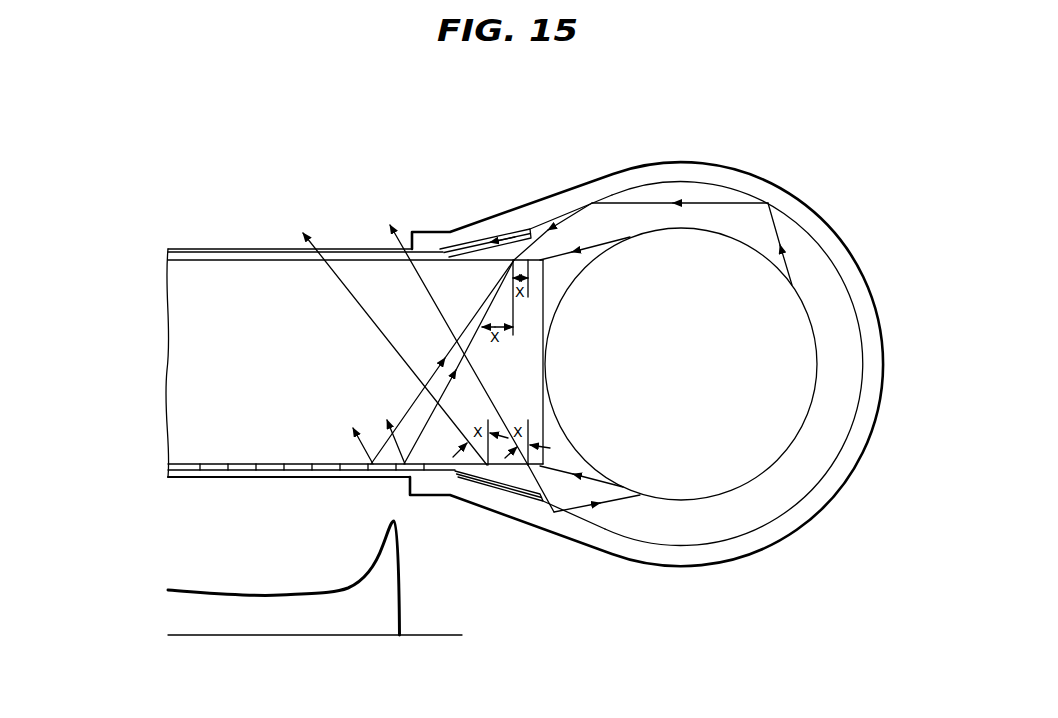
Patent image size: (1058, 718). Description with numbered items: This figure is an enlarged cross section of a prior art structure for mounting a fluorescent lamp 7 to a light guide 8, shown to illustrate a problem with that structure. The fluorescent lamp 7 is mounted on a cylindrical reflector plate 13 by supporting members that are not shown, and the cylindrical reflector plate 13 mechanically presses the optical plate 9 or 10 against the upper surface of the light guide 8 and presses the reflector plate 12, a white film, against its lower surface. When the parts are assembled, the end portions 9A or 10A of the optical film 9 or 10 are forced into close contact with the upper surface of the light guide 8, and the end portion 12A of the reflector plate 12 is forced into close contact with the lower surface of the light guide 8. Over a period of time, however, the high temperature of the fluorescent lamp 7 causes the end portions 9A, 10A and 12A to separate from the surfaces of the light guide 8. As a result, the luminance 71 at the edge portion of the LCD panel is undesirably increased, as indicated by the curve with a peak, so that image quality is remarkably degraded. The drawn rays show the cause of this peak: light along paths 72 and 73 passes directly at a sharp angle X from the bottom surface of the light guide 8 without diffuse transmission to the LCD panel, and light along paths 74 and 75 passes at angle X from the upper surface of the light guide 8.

The fluorescent lamp 7 is at (805, 422).
The light guide 8 is at (183, 343).
The optical plate 9 is at (167, 249).
The end portion of optical film 9A is at (527, 228).
The optical plate 10 is at (166, 255).
The end portion of optical film 10A is at (535, 236).
The reflector plate 12 is at (170, 472).
The end portion of reflector plate 12A is at (553, 512).
The cylindrical reflector plate 13 is at (807, 220).
The luminance 71 is at (373, 558).
The light path 72 is at (357, 287).
The light path 73 is at (428, 297).
The light path 74 is at (413, 412).
The light path 75 is at (458, 363).